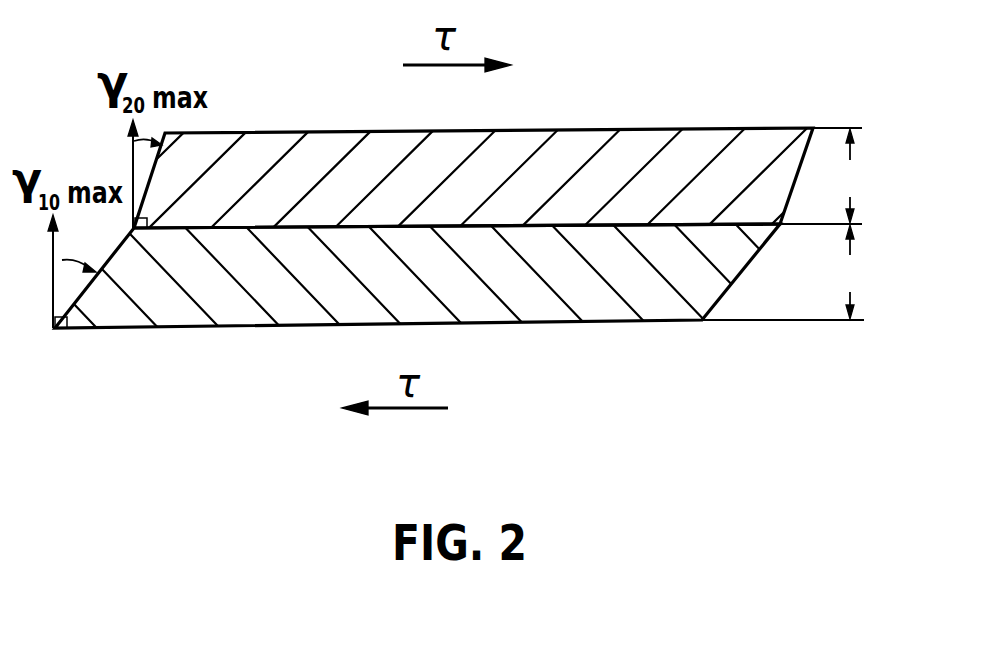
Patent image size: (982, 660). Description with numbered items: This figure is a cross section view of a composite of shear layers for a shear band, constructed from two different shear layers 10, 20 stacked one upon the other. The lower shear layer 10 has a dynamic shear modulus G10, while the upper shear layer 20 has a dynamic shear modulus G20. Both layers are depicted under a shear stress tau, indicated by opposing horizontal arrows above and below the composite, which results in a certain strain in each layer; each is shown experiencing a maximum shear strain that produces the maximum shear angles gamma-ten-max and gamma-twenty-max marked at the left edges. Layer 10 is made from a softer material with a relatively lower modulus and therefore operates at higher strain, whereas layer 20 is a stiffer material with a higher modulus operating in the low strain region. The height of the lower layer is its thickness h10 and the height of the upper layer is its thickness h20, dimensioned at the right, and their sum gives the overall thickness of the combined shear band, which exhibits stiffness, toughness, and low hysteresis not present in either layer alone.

The shear layer 10 is at (457, 283).
The shear layer 20 is at (430, 191).
The thickness of layer 10 h10 is at (851, 272).
The thickness of layer 20 h20 is at (849, 176).